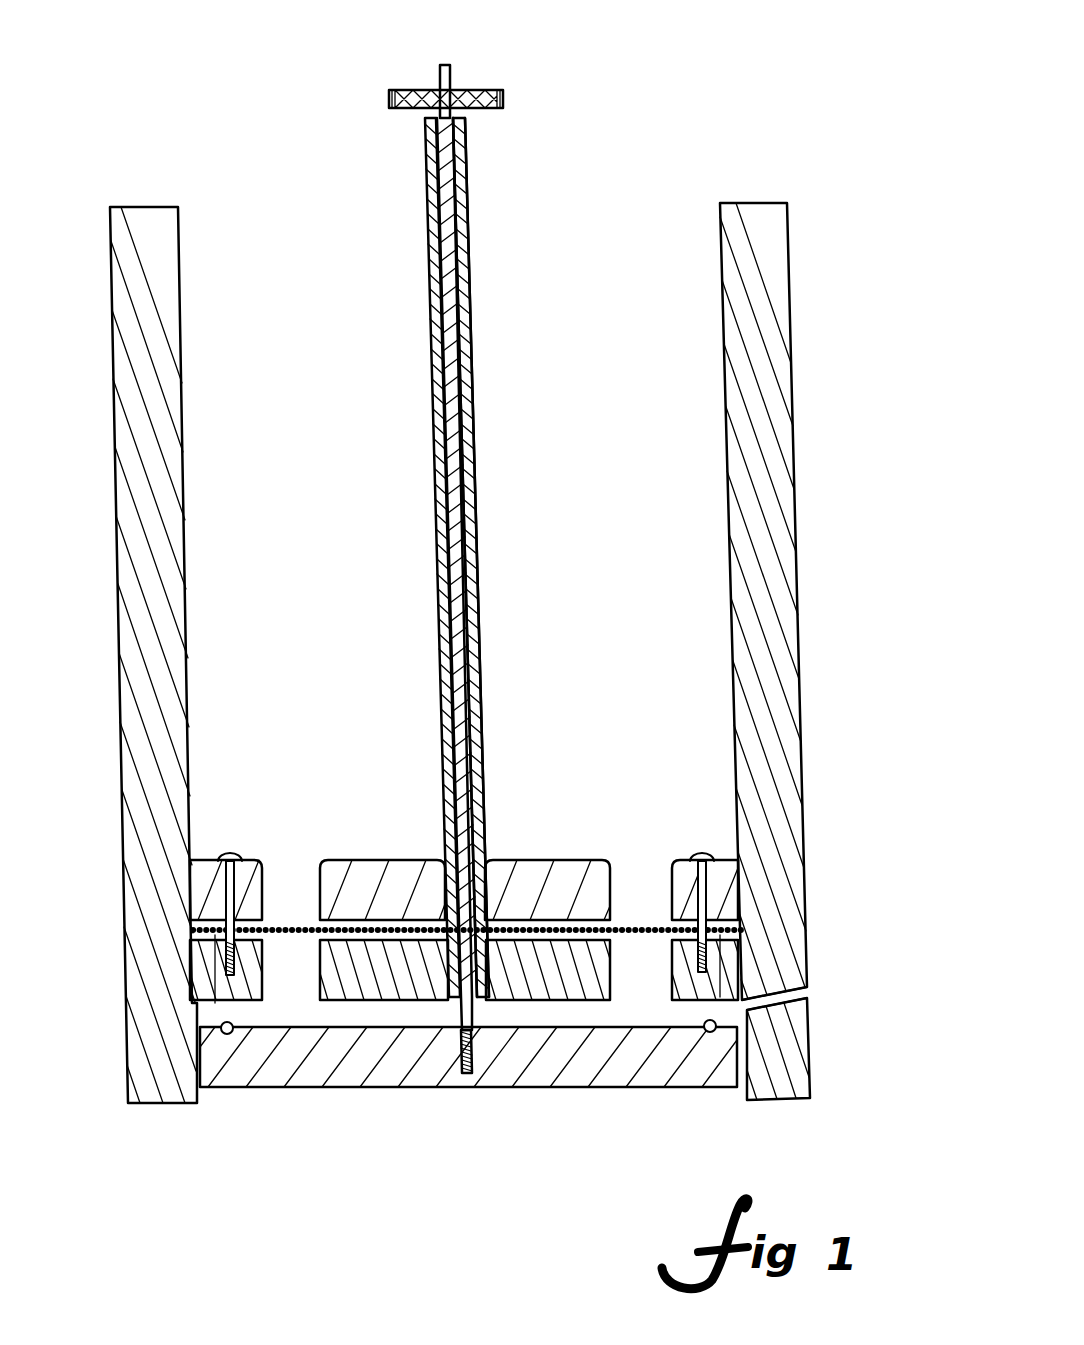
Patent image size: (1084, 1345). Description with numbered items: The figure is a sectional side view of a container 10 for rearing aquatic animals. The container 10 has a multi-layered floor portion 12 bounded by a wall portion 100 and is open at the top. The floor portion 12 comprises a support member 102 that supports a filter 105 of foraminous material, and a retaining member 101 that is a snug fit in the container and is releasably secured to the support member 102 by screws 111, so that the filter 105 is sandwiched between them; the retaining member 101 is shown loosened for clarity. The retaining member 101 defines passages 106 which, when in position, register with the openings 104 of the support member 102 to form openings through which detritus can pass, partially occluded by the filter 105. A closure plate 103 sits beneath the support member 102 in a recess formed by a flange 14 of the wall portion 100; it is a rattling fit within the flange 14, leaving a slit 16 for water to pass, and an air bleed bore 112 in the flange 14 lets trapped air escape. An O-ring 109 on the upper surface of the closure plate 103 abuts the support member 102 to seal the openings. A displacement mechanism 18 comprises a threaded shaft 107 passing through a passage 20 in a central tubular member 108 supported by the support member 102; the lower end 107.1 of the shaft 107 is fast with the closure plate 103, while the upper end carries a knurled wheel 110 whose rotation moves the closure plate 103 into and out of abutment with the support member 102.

The container 10 is at (838, 588).
The wall portion 100 is at (787, 203).
The air bleed bore 112 is at (803, 990).
The flange 14 is at (810, 1040).
The closure plate 103 is at (383, 1087).
The slit 16 is at (740, 1085).
The O-ring 109 is at (230, 1034).
The retaining member 101 is at (385, 870).
The passages 106 is at (630, 870).
The openings 104 is at (643, 972).
The support member 102 is at (362, 948).
The filter 105 is at (272, 928).
The screws 111 is at (692, 850).
The tubular member 108 is at (425, 228).
The displacement mechanism 18 is at (476, 474).
The floor portion 12 is at (527, 808).
The passage 20 is at (471, 348).
The threaded shaft 107 is at (436, 75).
The knurled wheel 110 is at (497, 92).
The end of the shaft 107.1 is at (478, 1060).